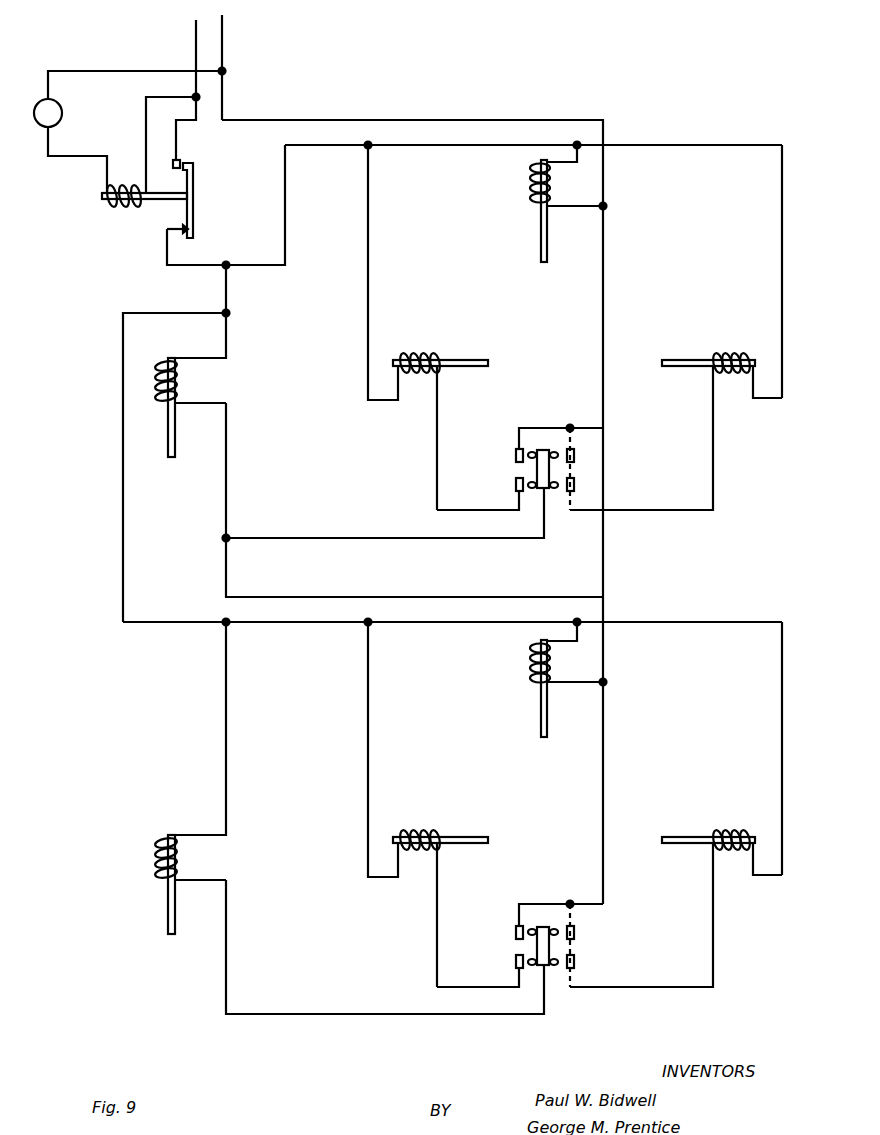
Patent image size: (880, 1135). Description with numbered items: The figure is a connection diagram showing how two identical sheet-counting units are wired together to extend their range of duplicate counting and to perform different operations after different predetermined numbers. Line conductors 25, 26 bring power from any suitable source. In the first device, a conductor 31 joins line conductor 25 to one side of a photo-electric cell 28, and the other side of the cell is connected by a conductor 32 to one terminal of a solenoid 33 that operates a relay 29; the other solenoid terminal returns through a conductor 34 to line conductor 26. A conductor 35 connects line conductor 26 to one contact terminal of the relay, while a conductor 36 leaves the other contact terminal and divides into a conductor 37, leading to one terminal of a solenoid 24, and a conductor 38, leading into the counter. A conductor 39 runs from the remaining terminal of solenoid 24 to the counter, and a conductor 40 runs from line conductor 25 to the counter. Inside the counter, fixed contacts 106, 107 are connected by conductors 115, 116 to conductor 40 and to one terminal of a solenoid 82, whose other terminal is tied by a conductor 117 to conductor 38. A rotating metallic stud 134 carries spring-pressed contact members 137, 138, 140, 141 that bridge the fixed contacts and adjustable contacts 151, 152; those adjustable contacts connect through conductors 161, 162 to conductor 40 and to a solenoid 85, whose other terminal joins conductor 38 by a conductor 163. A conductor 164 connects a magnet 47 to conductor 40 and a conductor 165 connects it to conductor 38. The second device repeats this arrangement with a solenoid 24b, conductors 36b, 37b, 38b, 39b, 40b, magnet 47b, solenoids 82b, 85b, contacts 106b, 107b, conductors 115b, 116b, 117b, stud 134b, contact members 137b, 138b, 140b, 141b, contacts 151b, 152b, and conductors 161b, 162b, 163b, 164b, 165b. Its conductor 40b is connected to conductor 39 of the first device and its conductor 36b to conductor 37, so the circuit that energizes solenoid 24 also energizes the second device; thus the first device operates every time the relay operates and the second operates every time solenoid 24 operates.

The solenoid 24 is at (180, 382).
The line conductor 25 is at (222, 32).
The line conductor 26 is at (196, 29).
The photo-electric cell 28 is at (59, 108).
The relay 29 is at (172, 200).
The conductor 31 is at (90, 71).
The conductor 32 is at (58, 160).
The solenoid 33 is at (121, 208).
The conductor 34 is at (146, 134).
The conductor 35 is at (177, 159).
The conductor 36 is at (197, 268).
The conductor 37 is at (228, 300).
The conductor 38 is at (300, 148).
The conductor 39 is at (228, 474).
The conductor 40 is at (318, 118).
The magnet 47 is at (535, 183).
The solenoid 82 is at (412, 358).
The solenoid 85 is at (718, 357).
The metallic contact 106 is at (515, 457).
The metallic contact 107 is at (515, 484).
The conductor 115 is at (518, 438).
The conductor 116 is at (518, 501).
The conductor 117 is at (370, 291).
The metallic stud 134 is at (545, 490).
The contact member 137 is at (532, 451).
The contact member 138 is at (554, 451).
The contact member 140 is at (532, 490).
The contact member 141 is at (555, 490).
The contact 151 is at (575, 461).
The contact 152 is at (575, 487).
The conductor 161 is at (573, 437).
The conductor 162 is at (600, 510).
The conductor 163 is at (782, 243).
The conductor 164 is at (566, 208).
The conductor 165 is at (563, 165).
The solenoid 24b is at (180, 858).
The conductor 36b is at (125, 548).
The conductor 37b is at (228, 734).
The conductor 38b is at (288, 625).
The conductor 39b is at (228, 944).
The conductor 40b is at (228, 576).
The magnet 47b is at (535, 663).
The solenoid 82b is at (412, 835).
The solenoid 85b is at (746, 827).
The metallic contact 106b is at (515, 934).
The metallic contact 107b is at (515, 961).
The conductor 115b is at (518, 913).
The conductor 116b is at (518, 979).
The conductor 117b is at (370, 758).
The metallic stud 134b is at (545, 967).
The contact member 137b is at (532, 928).
The contact member 138b is at (554, 928).
The contact member 140b is at (532, 967).
The contact member 141b is at (555, 967).
The contact 151b is at (575, 938).
The contact 152b is at (575, 962).
The conductor 161b is at (573, 913).
The conductor 162b is at (605, 987).
The conductor 163b is at (782, 719).
The conductor 164b is at (566, 682).
The conductor 165b is at (566, 641).